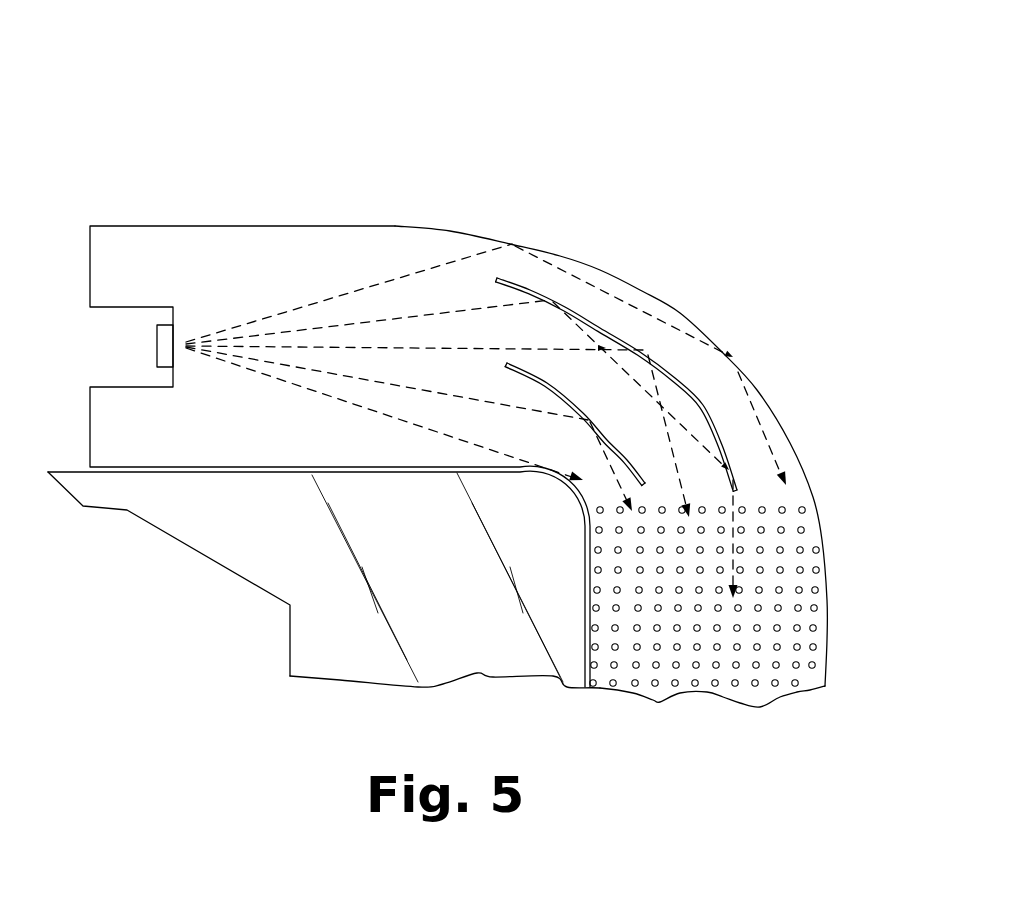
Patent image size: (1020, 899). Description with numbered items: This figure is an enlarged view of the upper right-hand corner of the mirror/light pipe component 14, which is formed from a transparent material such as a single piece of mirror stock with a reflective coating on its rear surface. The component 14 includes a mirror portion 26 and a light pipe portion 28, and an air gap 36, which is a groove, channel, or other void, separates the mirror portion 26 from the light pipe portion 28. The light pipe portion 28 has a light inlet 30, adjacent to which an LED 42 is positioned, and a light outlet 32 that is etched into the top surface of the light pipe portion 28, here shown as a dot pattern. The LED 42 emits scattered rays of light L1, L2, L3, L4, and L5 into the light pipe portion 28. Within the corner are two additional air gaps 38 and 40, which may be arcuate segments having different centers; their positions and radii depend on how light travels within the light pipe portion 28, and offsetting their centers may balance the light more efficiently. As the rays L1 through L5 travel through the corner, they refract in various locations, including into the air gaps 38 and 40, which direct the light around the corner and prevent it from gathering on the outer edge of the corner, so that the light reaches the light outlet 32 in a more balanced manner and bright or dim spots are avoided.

The mirror/light pipe component 14 is at (668, 199).
The mirror portion 26 is at (279, 552).
The light pipe portion 28 is at (820, 428).
The light inlet 30 is at (173, 318).
The light outlet 32 is at (807, 680).
The air gap 36 is at (213, 472).
The air gap 38 is at (708, 410).
The air gap 40 is at (612, 446).
The LED 42 is at (157, 347).
The light ray L1 is at (352, 293).
The light ray L2 is at (383, 318).
The light ray L3 is at (383, 347).
The light ray L4 is at (363, 377).
The light ray L5 is at (335, 397).